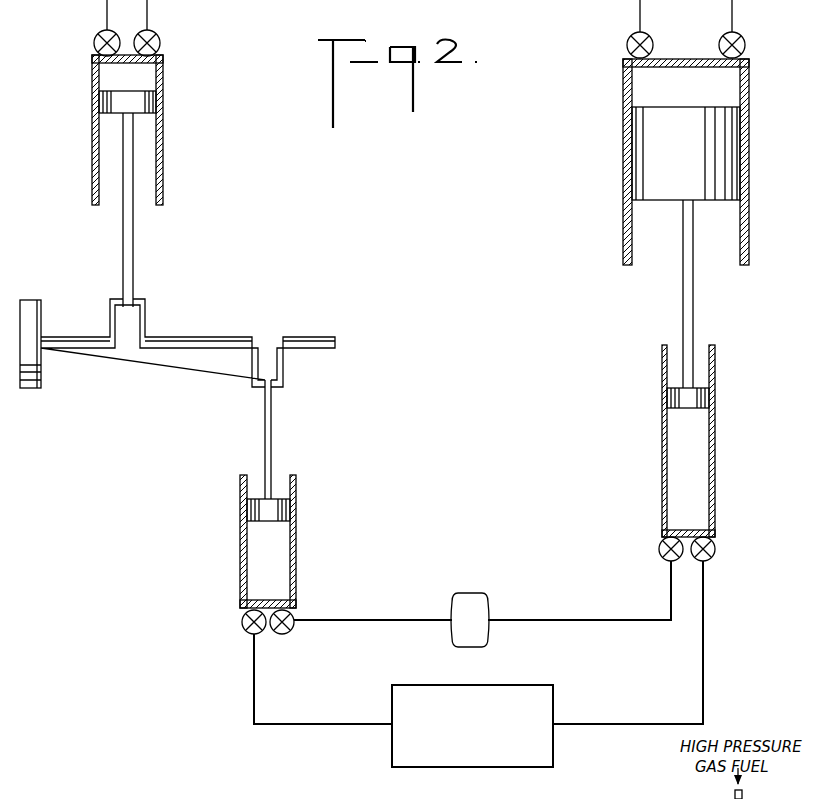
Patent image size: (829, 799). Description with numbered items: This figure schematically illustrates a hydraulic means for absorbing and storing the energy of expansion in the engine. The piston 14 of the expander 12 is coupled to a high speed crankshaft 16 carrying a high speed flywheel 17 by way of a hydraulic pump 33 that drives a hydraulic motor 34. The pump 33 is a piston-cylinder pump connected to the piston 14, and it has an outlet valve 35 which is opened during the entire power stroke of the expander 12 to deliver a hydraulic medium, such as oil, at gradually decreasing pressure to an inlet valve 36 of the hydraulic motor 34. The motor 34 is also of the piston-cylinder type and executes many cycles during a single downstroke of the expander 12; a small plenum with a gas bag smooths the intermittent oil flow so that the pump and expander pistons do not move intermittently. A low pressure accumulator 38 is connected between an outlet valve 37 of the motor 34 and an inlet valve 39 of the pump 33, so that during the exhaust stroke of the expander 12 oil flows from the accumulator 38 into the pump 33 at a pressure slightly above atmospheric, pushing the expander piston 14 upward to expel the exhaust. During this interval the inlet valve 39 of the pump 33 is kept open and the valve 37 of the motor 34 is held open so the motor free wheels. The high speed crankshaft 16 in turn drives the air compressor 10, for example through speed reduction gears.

The air compressor 10 is at (82, 150).
The expander 12 is at (765, 143).
The piston 14 is at (648, 176).
The crankshaft 16 is at (216, 335).
The high speed flywheel 17 is at (41, 302).
The hydraulic pump 33 is at (733, 450).
The hydraulic motor 34 is at (232, 524).
The outlet valve 35 is at (659, 549).
The inlet valve 36 is at (295, 614).
The outlet valve 37 is at (243, 623).
The low pressure accumulator 38 is at (485, 763).
The inlet valve 39 is at (716, 549).